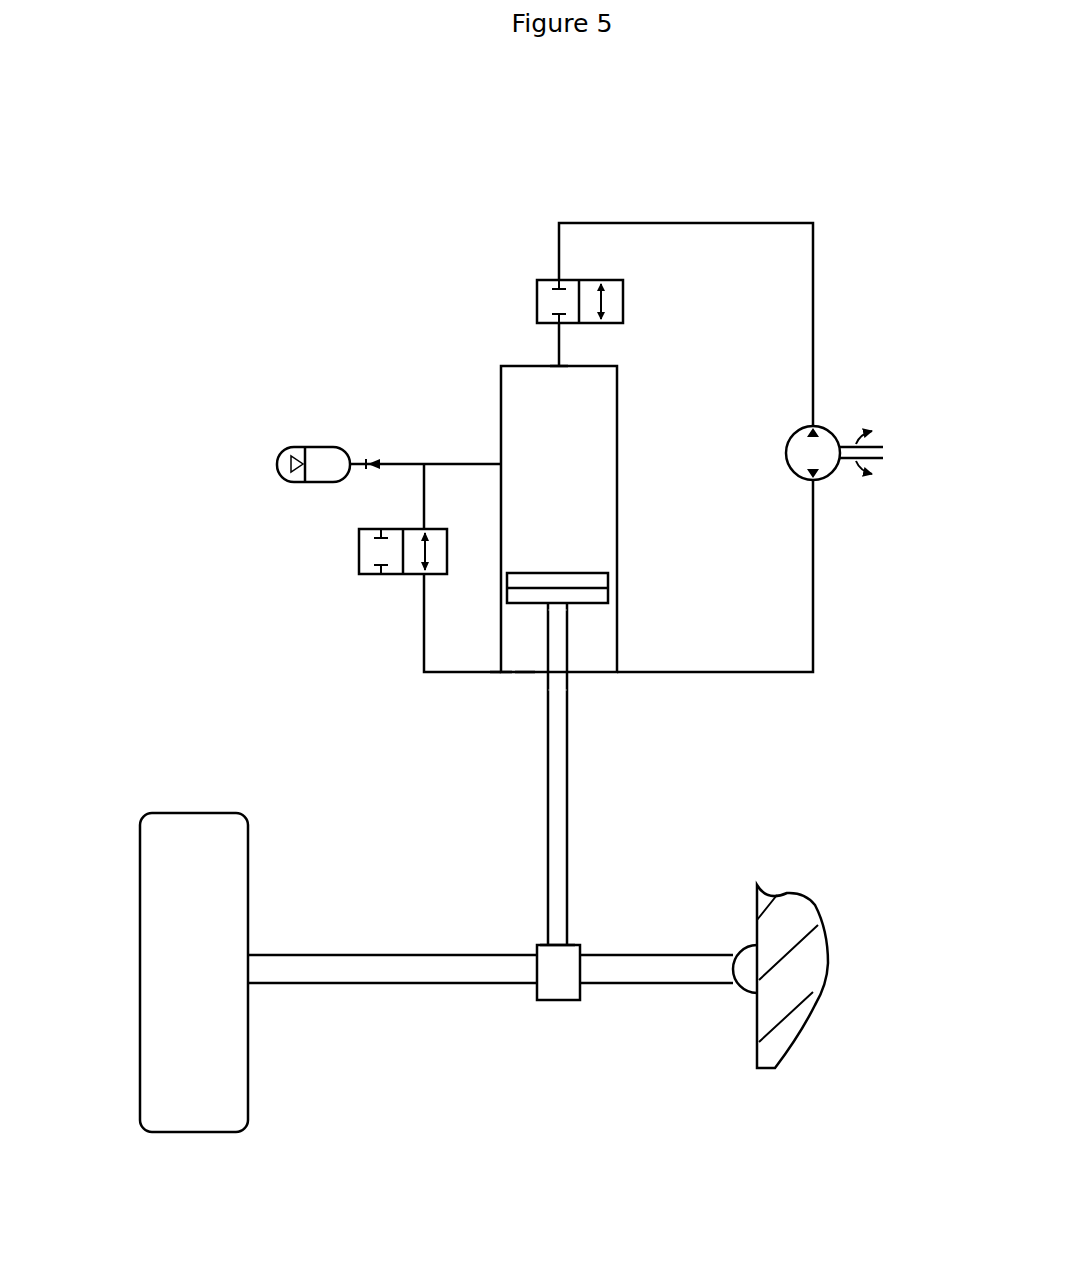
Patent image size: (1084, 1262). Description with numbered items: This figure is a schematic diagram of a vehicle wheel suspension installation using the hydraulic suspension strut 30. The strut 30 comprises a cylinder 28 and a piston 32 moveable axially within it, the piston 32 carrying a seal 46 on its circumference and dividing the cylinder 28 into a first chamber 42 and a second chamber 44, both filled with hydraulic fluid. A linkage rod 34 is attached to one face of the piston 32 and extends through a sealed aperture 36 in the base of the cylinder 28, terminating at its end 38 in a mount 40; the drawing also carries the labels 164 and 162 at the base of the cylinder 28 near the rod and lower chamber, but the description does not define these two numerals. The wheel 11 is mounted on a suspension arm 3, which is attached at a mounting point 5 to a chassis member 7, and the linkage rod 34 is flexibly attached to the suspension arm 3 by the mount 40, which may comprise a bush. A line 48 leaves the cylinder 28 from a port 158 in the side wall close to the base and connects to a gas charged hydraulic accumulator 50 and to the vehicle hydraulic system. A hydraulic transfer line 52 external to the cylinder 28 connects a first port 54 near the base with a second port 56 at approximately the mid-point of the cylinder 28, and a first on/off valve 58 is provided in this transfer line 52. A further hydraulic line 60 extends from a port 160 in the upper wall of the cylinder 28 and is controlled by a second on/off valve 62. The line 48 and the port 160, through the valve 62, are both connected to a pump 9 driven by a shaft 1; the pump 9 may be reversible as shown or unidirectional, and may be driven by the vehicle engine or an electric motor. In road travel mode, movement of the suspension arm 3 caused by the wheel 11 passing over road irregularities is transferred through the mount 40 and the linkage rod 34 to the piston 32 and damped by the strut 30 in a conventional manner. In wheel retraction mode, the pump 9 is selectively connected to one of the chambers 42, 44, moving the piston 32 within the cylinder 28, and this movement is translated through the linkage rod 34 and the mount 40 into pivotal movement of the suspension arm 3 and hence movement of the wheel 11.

The hydraulic suspension strut 30 is at (417, 277).
The further hydraulic line 60 is at (558, 349).
The first chamber 42 is at (555, 410).
The gas charged hydraulic accumulator 50 is at (315, 447).
The second port 56 is at (501, 464).
The first on/off valve 58 is at (359, 550).
The seal 46 is at (507, 589).
The hydraulic transfer line 52 is at (423, 650).
The first port 54 is at (500, 676).
The rod seal 164 is at (523, 679).
The sealed aperture 36 is at (546, 682).
The end of linkage rod 38 is at (543, 935).
The wheel 11 is at (139, 987).
The suspension arm 3 is at (415, 988).
The second on/off valve 62 is at (623, 300).
The port 160 is at (559, 366).
The cylinder 28 is at (617, 406).
The piston 32 is at (588, 570).
The second chamber 44 is at (598, 627).
The line 48 is at (717, 665).
The port 158 is at (632, 677).
The lower chamber 162 is at (610, 675).
The linkage rod 34 is at (570, 905).
The mount 40 is at (587, 948).
The pump 9 is at (837, 438).
The shaft 1 is at (883, 447).
The chassis member 7 is at (803, 895).
The mounting point 5 is at (743, 995).